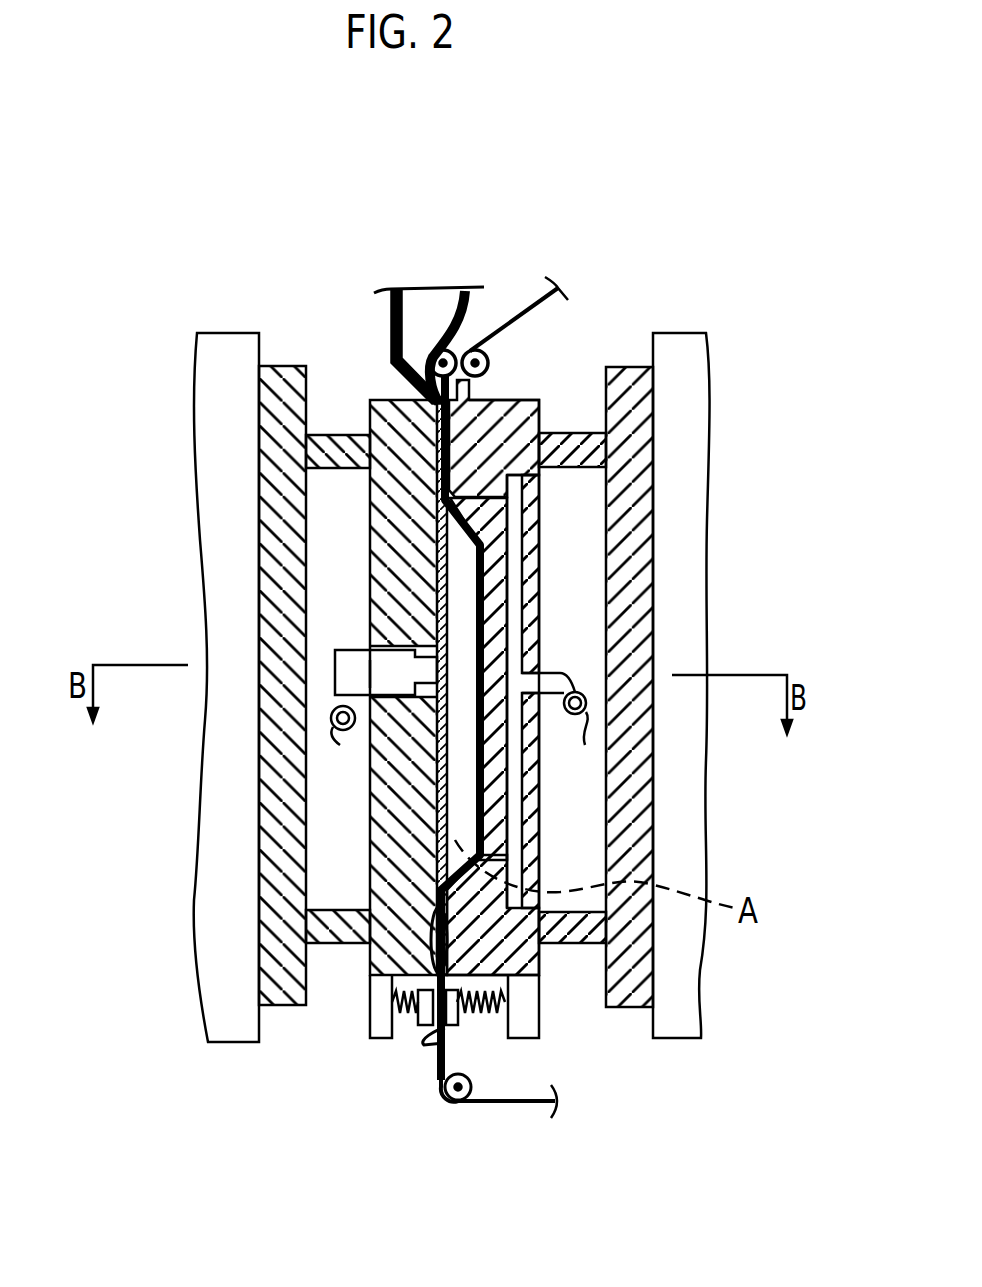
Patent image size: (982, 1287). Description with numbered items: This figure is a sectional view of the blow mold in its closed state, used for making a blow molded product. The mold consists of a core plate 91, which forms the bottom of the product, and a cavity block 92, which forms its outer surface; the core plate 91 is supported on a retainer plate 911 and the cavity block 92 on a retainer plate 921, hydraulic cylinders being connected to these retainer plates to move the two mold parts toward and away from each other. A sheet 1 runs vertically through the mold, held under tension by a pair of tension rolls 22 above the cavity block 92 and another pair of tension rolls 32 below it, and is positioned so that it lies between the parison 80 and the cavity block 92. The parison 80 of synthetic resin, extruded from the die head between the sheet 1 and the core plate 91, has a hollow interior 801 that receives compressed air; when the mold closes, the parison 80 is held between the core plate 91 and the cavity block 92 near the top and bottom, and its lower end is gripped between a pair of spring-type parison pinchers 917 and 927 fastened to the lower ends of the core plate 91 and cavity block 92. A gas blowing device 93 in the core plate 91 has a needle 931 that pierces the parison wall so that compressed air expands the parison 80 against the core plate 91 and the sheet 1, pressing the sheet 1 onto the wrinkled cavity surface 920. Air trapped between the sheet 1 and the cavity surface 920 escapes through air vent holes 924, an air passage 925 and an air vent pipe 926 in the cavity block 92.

The sheet 1 is at (525, 307).
The tension rolls 22 is at (488, 362).
The tension rolls 32 is at (461, 1102).
The parison 80 is at (445, 840).
The core plate 91 is at (388, 559).
The cavity block 92 is at (490, 580).
The gas blowing device 93 is at (335, 651).
The hollow interior 801 is at (391, 308).
The retainer plate 911 is at (211, 431).
The parison pincher 917 is at (437, 1027).
The cavity surface 920 is at (520, 798).
The retainer plate 921 is at (682, 405).
The air vent holes 924 is at (518, 523).
The air passage 925 is at (517, 645).
The air vent pipe 926 is at (585, 693).
The parison pincher 927 is at (447, 1028).
The needle 931 is at (470, 735).